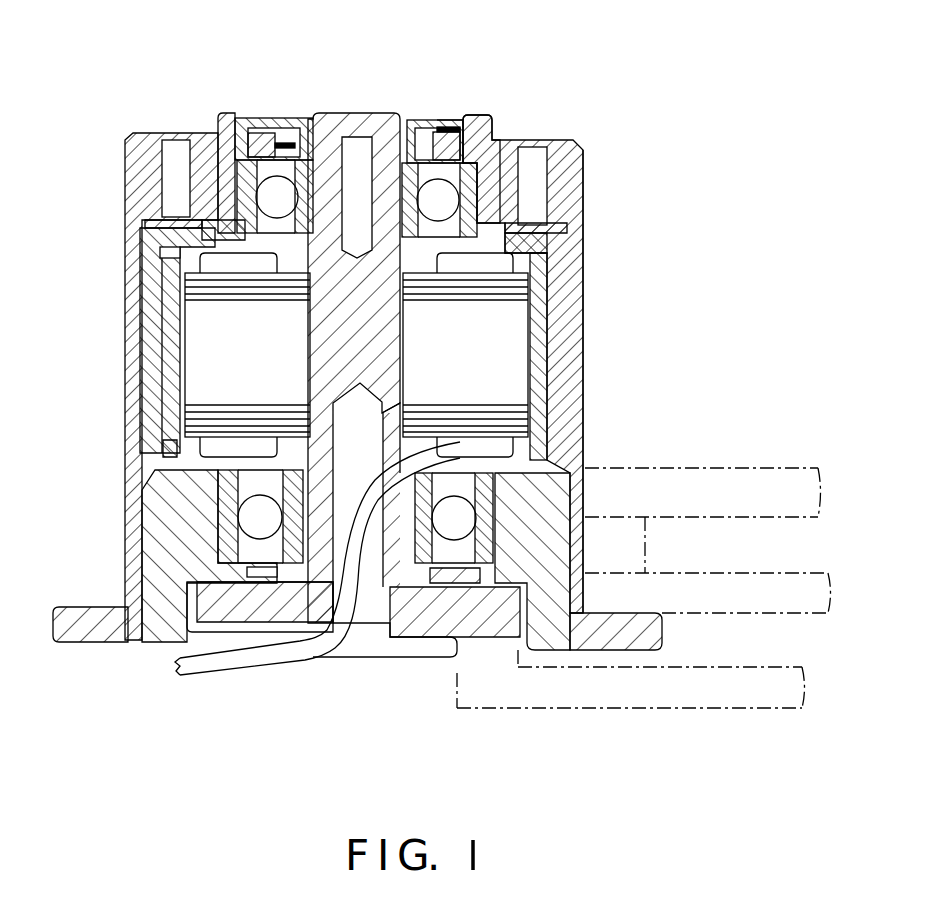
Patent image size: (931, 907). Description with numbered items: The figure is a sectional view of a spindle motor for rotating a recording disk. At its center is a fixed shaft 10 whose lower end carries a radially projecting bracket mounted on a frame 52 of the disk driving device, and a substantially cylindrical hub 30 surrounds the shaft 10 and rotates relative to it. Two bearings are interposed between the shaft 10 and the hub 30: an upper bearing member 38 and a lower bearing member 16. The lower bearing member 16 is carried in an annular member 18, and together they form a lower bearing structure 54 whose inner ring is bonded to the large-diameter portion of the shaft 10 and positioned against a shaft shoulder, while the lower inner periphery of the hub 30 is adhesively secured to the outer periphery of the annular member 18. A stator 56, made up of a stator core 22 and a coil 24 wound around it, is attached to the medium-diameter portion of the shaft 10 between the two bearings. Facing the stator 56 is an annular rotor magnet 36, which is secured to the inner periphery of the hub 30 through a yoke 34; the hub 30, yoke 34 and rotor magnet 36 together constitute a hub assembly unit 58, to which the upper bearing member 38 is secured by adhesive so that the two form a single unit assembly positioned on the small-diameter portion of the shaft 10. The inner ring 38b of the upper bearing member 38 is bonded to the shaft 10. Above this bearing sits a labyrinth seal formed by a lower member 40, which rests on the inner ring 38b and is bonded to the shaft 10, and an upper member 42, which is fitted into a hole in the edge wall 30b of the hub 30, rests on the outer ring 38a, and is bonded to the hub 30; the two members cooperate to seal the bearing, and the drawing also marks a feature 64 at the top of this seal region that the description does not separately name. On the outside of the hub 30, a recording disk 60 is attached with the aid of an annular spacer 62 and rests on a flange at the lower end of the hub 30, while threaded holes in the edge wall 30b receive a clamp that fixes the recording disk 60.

The shaft 10 is at (410, 657).
The lower bearing member 16 is at (488, 513).
The annular member 18 is at (160, 642).
The stator core 22 is at (503, 327).
The coil 24 is at (180, 440).
The hub 30 is at (130, 320).
The edge wall 30b is at (212, 150).
The yoke 34 is at (560, 342).
The rotor magnet 36 is at (167, 380).
The upper bearing member 38 is at (243, 232).
The outer ring 38a is at (243, 173).
The inner ring 38b is at (405, 177).
The lower member 40 is at (263, 128).
The upper member 42 is at (287, 117).
The frame 52 is at (568, 707).
The lower bearing structure 54 is at (156, 468).
The stator 56 is at (514, 452).
The hub assembly unit 58 is at (592, 181).
The recording disk 60 is at (680, 468).
The annular spacer 62 is at (645, 527).
The seal lip 64 is at (442, 116).